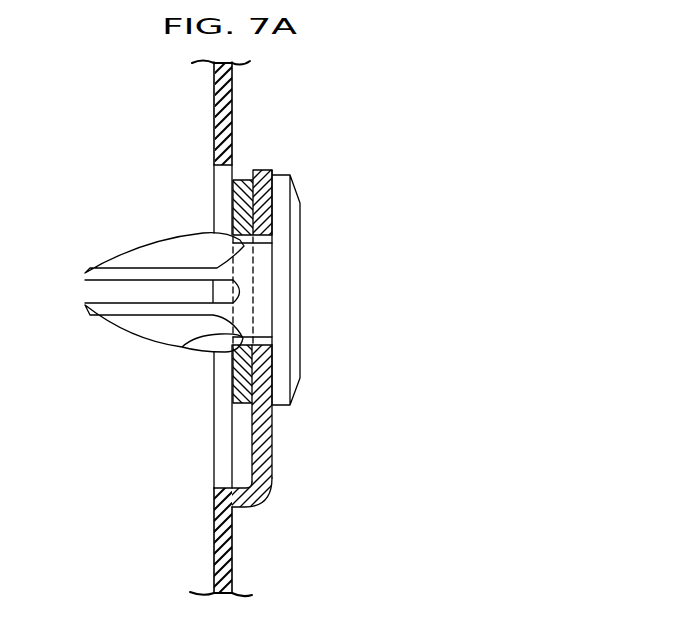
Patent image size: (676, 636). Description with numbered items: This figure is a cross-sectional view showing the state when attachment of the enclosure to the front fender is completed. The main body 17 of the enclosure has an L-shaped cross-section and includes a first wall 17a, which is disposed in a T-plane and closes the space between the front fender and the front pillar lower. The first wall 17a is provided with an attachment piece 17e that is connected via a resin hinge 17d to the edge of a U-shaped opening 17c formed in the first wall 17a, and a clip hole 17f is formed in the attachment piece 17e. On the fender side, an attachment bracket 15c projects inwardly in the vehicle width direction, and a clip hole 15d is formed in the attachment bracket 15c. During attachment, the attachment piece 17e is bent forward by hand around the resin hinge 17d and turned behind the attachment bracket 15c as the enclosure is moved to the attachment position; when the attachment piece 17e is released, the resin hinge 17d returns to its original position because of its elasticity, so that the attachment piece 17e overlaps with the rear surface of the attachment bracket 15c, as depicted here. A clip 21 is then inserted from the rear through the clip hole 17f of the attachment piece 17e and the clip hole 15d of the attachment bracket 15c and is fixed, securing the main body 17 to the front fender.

The main body 17 is at (234, 104).
The first wall 17a is at (227, 130).
The opening 17c is at (215, 166).
The resin hinge 17d is at (258, 503).
The attachment piece 17e is at (267, 427).
The clip hole 17f is at (263, 338).
The attachment bracket 15c is at (235, 383).
The clip hole 15d is at (190, 340).
The clip 21 is at (298, 243).